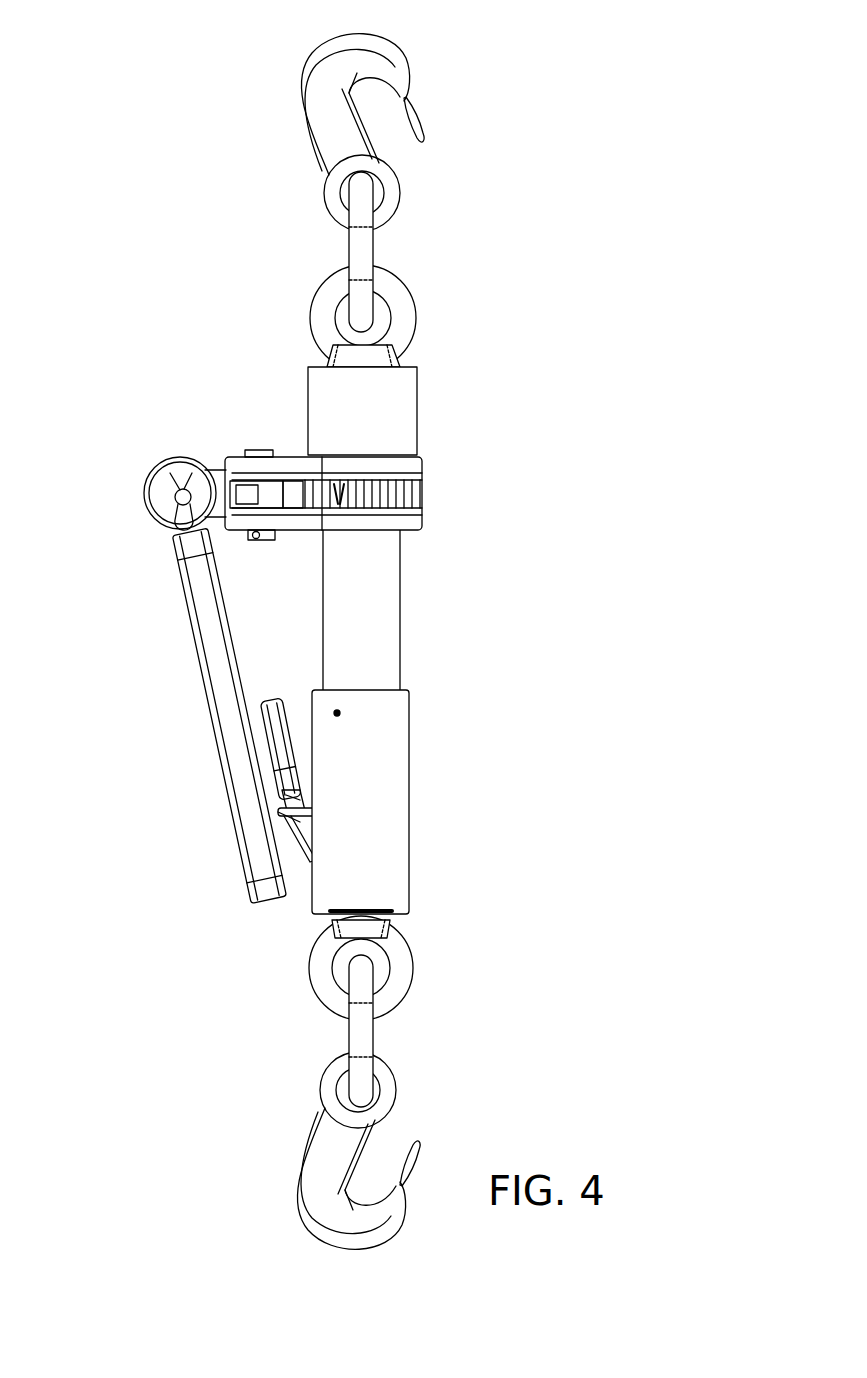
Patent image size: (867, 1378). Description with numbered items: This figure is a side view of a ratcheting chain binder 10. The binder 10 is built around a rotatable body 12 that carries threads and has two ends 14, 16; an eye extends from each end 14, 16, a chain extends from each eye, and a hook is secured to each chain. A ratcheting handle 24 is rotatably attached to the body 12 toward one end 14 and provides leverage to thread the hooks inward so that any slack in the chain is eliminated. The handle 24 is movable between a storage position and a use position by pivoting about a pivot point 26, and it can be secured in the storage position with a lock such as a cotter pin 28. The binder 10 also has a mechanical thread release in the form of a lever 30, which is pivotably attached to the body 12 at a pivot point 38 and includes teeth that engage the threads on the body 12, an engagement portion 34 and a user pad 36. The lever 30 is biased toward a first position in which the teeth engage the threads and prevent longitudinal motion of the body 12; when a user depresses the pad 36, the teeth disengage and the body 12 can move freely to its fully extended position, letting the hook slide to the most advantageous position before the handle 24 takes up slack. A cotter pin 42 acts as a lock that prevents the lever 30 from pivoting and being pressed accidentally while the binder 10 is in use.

The ratcheting chain binder 10 is at (690, 258).
The rotatable body 12 is at (390, 614).
The end 14 is at (416, 385).
The end 16 is at (401, 907).
The ratcheting handle 24 is at (206, 656).
The pivot point 26 is at (181, 494).
The cotter pin 28 is at (176, 516).
The lever 30 is at (280, 812).
The engagement portion 34 is at (297, 840).
The user pad 36 is at (272, 738).
The pivot point 38 is at (334, 802).
The cotter pin 42 is at (330, 815).